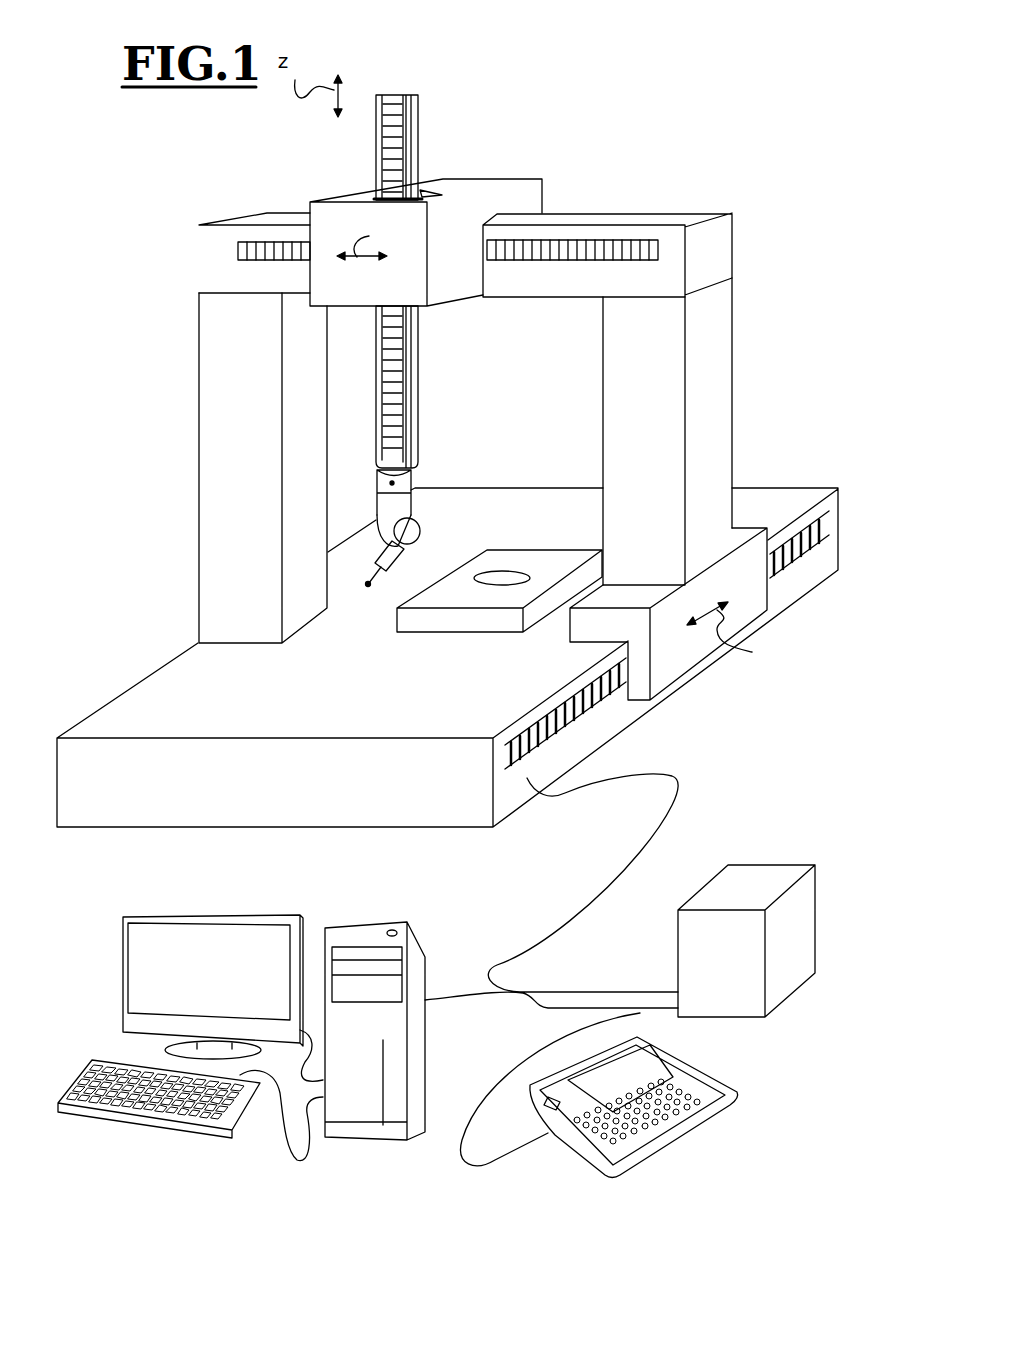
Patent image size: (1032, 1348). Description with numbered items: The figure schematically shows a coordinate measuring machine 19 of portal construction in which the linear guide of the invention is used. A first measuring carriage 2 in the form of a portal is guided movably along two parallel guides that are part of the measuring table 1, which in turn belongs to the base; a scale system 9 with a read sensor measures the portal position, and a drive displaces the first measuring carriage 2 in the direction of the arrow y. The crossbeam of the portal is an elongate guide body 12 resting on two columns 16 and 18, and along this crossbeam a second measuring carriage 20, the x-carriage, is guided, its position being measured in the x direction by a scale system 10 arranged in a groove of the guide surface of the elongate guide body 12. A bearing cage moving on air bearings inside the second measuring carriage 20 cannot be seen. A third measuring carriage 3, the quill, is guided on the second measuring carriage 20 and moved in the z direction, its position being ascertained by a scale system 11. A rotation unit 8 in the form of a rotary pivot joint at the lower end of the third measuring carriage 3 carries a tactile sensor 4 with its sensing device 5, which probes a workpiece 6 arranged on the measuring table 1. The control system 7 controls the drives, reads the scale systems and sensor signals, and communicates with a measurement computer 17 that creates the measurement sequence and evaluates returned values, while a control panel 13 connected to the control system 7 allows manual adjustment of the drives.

The measuring table 1 is at (775, 500).
The first measuring carriage 2 is at (588, 350).
The third measuring carriage 3 is at (412, 134).
The tactile sensor 4 is at (412, 550).
The sensing device 5 is at (370, 568).
The workpiece 6 is at (430, 603).
The control system 7 is at (743, 887).
The rotation unit 8 is at (412, 498).
The scale system 9 is at (813, 546).
The scale system 10 is at (590, 246).
The scale system 11 is at (377, 98).
The elongate guide body 12 is at (552, 282).
The control panel 13 is at (737, 1088).
The column 16 is at (230, 422).
The measurement computer 17 is at (397, 909).
The column 18 is at (673, 406).
The coordinate measuring machine 19 is at (802, 295).
The second measuring carriage 20 is at (363, 196).